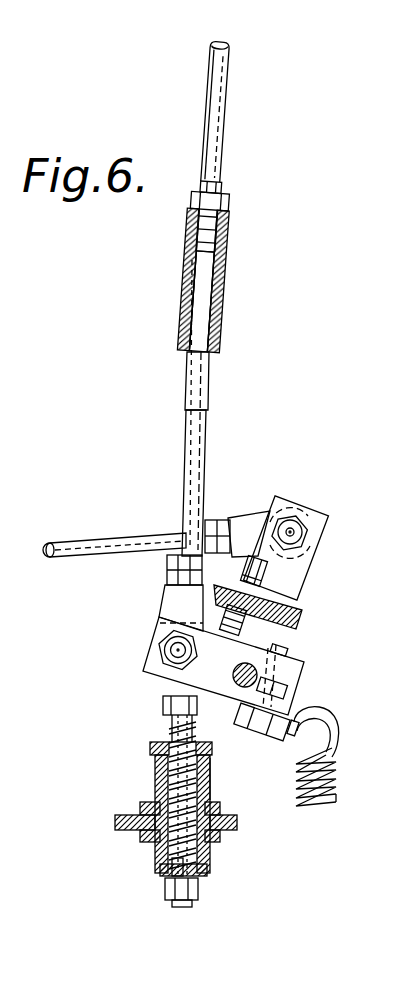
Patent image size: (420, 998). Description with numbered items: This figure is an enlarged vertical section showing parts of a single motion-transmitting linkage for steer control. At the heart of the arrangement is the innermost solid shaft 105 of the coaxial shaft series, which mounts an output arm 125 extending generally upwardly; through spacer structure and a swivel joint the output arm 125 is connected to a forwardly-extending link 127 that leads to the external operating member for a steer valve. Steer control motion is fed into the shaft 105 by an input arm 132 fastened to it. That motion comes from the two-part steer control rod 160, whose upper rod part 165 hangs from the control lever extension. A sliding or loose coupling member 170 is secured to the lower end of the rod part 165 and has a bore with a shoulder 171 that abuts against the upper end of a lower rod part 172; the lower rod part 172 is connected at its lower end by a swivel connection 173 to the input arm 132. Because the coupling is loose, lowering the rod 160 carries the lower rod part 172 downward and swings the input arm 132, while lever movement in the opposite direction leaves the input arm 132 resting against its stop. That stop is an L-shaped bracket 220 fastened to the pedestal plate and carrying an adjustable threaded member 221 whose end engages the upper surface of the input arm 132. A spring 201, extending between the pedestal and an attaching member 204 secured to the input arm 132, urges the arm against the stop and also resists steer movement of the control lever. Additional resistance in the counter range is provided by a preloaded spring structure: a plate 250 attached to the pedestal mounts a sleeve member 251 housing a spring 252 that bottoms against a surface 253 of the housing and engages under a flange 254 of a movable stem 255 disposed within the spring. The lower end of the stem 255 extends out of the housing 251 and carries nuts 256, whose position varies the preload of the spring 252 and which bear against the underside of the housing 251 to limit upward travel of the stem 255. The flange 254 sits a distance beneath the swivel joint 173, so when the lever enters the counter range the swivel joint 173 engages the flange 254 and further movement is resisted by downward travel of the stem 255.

The steer control rod 160 is at (238, 147).
The rod part 165 is at (219, 71).
The coupling member 170 is at (222, 298).
The shoulder 171 is at (212, 272).
The lower rod part 172 is at (194, 387).
The link 127 is at (78, 550).
The swivel connection 173 is at (160, 655).
The solid shaft 105 is at (295, 684).
The input arm 132 is at (222, 676).
The output arm 125 is at (292, 580).
The adjustable threaded member 221 is at (262, 575).
The L-shaped bracket 220 is at (298, 620).
The attaching member 204 is at (292, 640).
The spring 201 is at (327, 789).
The flange 254 is at (164, 702).
The spring 252 is at (172, 730).
The movable stem 255 is at (156, 767).
The sleeve member 251 is at (207, 773).
The plate 250 is at (233, 830).
The surface 253 is at (162, 877).
The nuts 256 is at (200, 887).